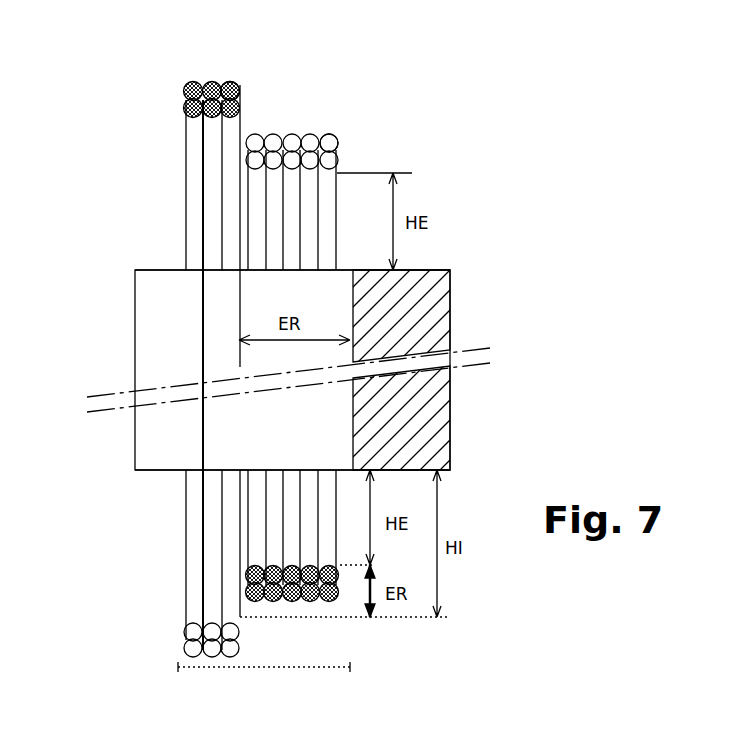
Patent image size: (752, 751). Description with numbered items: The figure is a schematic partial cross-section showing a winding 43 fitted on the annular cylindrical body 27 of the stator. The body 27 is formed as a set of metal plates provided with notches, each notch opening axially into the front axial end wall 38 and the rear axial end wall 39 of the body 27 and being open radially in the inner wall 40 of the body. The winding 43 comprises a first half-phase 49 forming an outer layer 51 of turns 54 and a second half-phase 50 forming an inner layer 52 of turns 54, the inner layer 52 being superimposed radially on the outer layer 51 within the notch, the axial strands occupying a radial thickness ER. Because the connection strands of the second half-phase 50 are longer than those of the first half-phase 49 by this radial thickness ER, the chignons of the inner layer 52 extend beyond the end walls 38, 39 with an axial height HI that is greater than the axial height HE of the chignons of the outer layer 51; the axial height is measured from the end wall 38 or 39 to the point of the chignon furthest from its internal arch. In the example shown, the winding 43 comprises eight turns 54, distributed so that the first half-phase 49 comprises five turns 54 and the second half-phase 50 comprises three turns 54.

The annular cylindrical body 27 is at (440, 330).
The front axial end wall 38 is at (424, 270).
The rear axial end wall 39 is at (450, 446).
The inner wall 40 is at (135, 368).
The winding 43 is at (262, 669).
The first half-phase 49 is at (290, 126).
The second half-phase 50 is at (205, 82).
The outer layer 51 is at (312, 600).
The inner layer 52 is at (238, 650).
The turns 54 is at (240, 88).